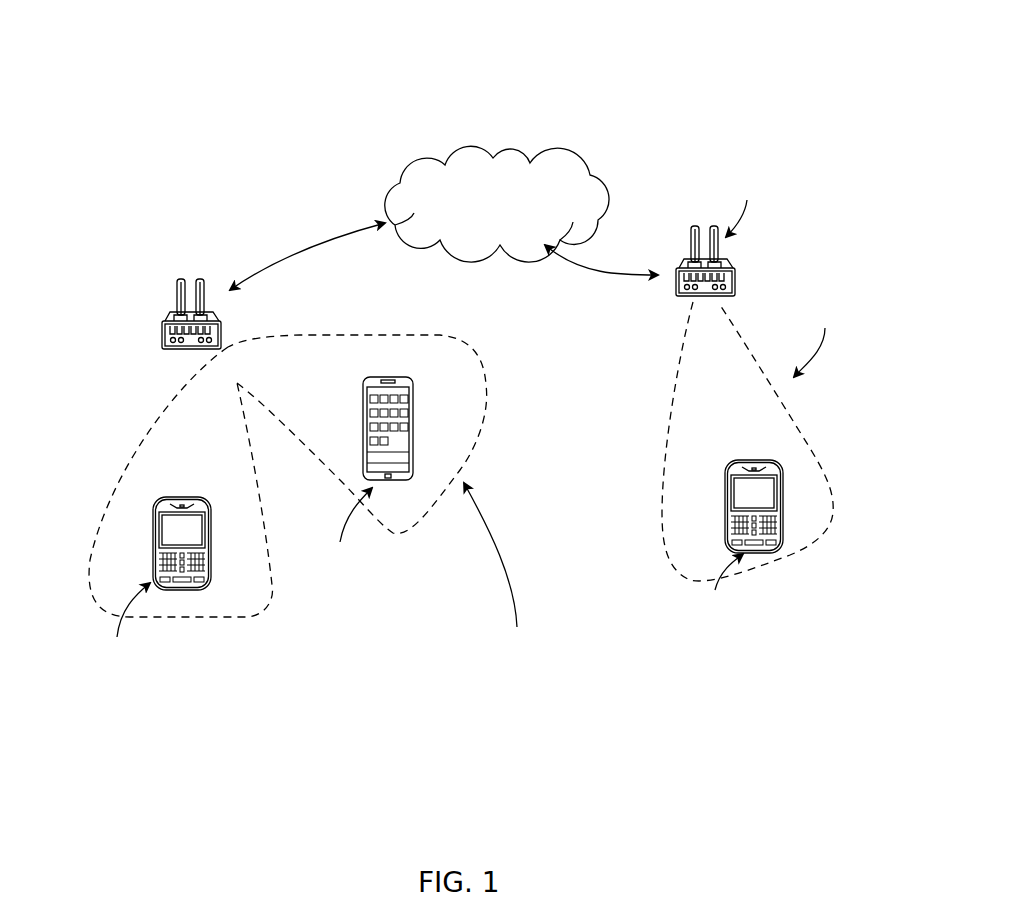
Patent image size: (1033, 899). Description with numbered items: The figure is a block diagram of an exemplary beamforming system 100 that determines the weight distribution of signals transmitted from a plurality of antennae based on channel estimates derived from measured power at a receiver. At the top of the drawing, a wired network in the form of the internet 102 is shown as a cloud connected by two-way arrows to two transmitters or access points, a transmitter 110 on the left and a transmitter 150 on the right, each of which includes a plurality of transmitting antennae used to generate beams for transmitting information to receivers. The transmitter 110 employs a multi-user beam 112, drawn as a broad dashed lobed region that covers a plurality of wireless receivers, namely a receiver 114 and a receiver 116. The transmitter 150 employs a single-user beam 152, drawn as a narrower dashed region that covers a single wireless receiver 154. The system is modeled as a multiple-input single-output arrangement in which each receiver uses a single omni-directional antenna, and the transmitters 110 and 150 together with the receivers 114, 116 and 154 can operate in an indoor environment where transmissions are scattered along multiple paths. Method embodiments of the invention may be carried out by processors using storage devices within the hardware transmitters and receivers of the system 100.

The beamforming system 100 is at (494, 29).
The internet 102 is at (400, 187).
The transmitter 110 is at (168, 210).
The multi-user beam 112 is at (484, 410).
The receiver 114 is at (193, 497).
The receiver 116 is at (363, 382).
The transmitter 150 is at (729, 181).
The single-user beam 152 is at (813, 453).
The wireless receiver 154 is at (743, 460).